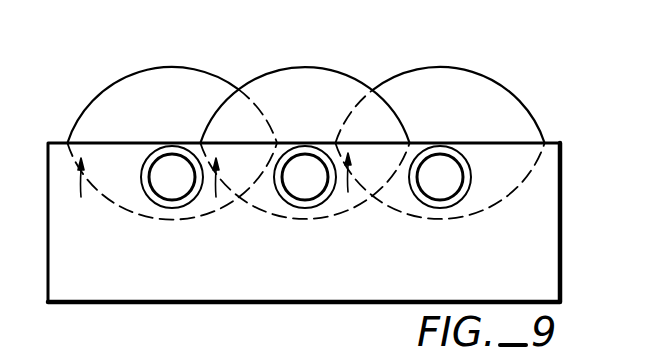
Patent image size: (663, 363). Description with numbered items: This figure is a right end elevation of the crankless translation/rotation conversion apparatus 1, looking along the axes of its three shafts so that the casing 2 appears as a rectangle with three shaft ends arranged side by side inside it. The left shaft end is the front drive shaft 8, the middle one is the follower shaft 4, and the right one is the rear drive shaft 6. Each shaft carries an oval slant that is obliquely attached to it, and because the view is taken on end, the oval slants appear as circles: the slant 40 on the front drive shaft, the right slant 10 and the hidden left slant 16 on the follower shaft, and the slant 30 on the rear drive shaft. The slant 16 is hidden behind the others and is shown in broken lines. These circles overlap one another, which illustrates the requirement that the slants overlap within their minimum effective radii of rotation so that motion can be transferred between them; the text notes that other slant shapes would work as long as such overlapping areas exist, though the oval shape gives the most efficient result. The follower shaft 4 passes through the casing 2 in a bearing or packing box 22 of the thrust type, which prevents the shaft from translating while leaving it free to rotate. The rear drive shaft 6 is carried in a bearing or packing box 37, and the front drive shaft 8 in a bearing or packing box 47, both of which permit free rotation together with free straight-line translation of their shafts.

The crankless translation/rotation conversion apparatus 1 is at (318, 166).
The casing 2 is at (549, 230).
The follower shaft 4 is at (305, 157).
The rear drive shaft 6 is at (455, 160).
The front drive shaft 8 is at (162, 167).
The right slant 10 is at (300, 70).
The left slant 16 is at (283, 84).
The bearing or packing box 22 is at (336, 148).
The oval slant 30 is at (498, 100).
The bearing or packing box 37 is at (443, 170).
The oval slant 40 is at (123, 85).
The bearing or packing box 47 is at (168, 153).